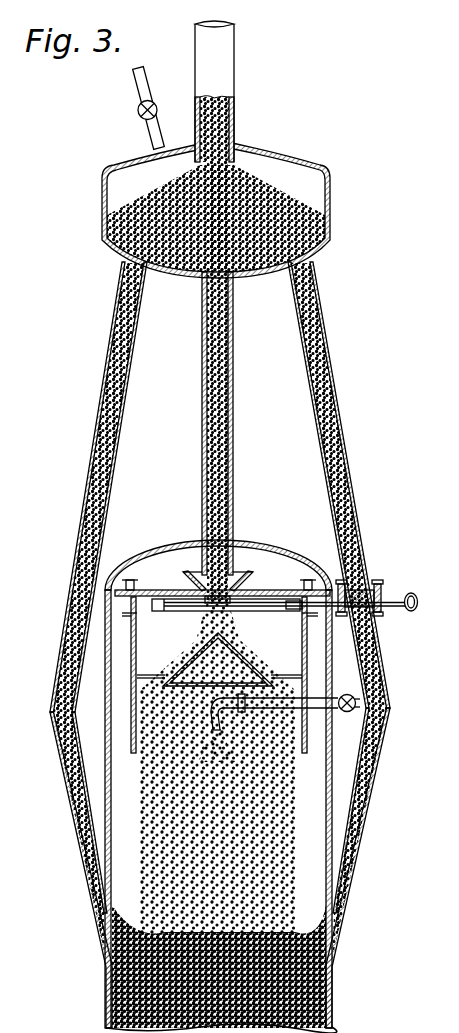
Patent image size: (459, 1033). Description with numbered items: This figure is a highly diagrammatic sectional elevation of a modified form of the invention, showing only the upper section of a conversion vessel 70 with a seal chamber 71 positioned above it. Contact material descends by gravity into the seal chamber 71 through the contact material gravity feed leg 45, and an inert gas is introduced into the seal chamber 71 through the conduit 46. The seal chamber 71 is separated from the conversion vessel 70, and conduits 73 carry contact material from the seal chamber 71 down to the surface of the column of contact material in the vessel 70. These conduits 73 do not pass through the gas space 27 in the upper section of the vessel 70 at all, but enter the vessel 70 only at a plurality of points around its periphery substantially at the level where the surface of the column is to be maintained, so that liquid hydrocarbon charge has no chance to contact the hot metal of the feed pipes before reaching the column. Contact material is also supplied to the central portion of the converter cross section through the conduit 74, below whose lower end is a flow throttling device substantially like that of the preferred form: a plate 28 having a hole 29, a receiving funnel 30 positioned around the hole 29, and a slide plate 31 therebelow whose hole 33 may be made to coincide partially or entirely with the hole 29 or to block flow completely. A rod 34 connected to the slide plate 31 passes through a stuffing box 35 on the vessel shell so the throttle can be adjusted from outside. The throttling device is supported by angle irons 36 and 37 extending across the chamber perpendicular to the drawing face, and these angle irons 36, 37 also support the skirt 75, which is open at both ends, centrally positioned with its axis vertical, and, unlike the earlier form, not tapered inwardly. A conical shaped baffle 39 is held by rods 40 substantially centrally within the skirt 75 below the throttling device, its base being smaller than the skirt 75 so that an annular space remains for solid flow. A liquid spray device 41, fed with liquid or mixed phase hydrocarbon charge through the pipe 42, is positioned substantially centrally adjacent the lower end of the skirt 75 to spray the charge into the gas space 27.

The gas space 27 is at (313, 815).
The plate 28 is at (163, 592).
The hole 29 is at (241, 570).
The receiving funnel 30 is at (268, 572).
The slide plate 31 is at (284, 605).
The hole 33 is at (205, 606).
The rod 34 is at (406, 595).
The stuffing box 35 is at (360, 585).
The angle iron 36 is at (117, 589).
The angle iron 37 is at (292, 579).
The conical shaped baffle 39 is at (268, 660).
The rods 40 is at (147, 665).
The liquid spray device 41 is at (212, 722).
The pipe 42 is at (353, 718).
The contact material gravity feed leg 45 is at (227, 69).
The conduit 46 is at (138, 130).
The conversion vessel 70 is at (195, 541).
The seal chamber 71 is at (331, 174).
The conduits 73 is at (104, 380).
The conduit 74 is at (203, 401).
The skirt 75 is at (131, 716).